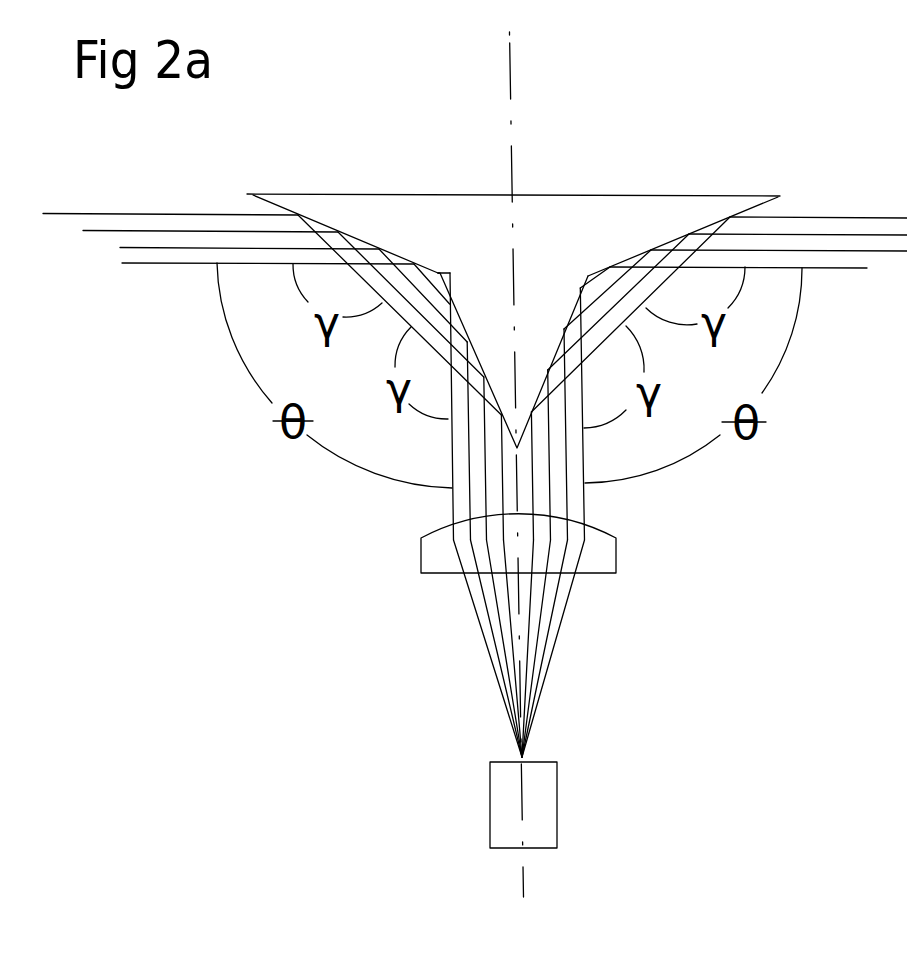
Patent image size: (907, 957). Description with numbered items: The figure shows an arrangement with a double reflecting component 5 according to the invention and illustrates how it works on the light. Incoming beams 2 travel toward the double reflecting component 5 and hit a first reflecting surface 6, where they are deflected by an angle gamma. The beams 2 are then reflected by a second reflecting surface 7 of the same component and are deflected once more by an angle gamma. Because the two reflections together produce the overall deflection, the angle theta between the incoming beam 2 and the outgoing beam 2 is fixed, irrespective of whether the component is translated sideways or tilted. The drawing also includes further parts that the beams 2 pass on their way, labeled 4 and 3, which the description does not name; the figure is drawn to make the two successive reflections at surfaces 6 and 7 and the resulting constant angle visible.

The beams 2 is at (566, 648).
The light source 3 is at (557, 802).
The lens 4 is at (586, 530).
The double reflecting component 5 is at (513, 291).
The first reflecting surface 6 is at (517, 373).
The second reflecting surface 7 is at (515, 190).